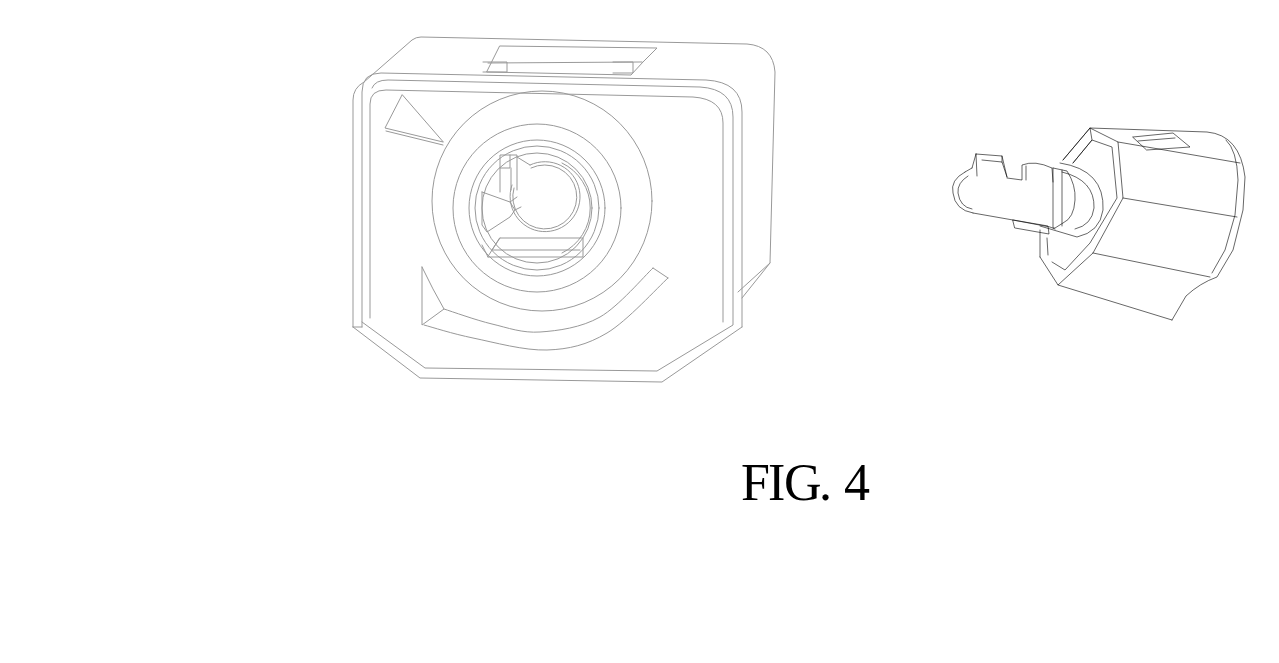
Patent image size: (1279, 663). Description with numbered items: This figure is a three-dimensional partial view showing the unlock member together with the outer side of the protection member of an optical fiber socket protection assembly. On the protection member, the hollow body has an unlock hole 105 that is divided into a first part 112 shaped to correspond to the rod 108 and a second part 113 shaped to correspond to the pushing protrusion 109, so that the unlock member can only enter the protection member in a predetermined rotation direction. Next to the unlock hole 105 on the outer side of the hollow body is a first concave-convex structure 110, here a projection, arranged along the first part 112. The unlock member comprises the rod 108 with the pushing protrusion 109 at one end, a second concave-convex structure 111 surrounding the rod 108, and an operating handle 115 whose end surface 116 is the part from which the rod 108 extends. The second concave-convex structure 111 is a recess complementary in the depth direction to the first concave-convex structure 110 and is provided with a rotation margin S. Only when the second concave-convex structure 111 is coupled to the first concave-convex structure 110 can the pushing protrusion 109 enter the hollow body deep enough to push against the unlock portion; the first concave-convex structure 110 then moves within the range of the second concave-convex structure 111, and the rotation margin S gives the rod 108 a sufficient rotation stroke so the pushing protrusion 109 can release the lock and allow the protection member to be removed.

The unlock hole 105 is at (260, 97).
The first part 112 is at (550, 192).
The second part 113 is at (503, 182).
The first concave-convex structure 110 is at (493, 211).
The rod 108 is at (1013, 204).
The pushing protrusion 109 is at (995, 170).
The second concave-convex structure 111 is at (1066, 194).
The rotation margin S is at (1062, 213).
The operating handle 115 is at (1096, 283).
The end surface 116 is at (1092, 150).